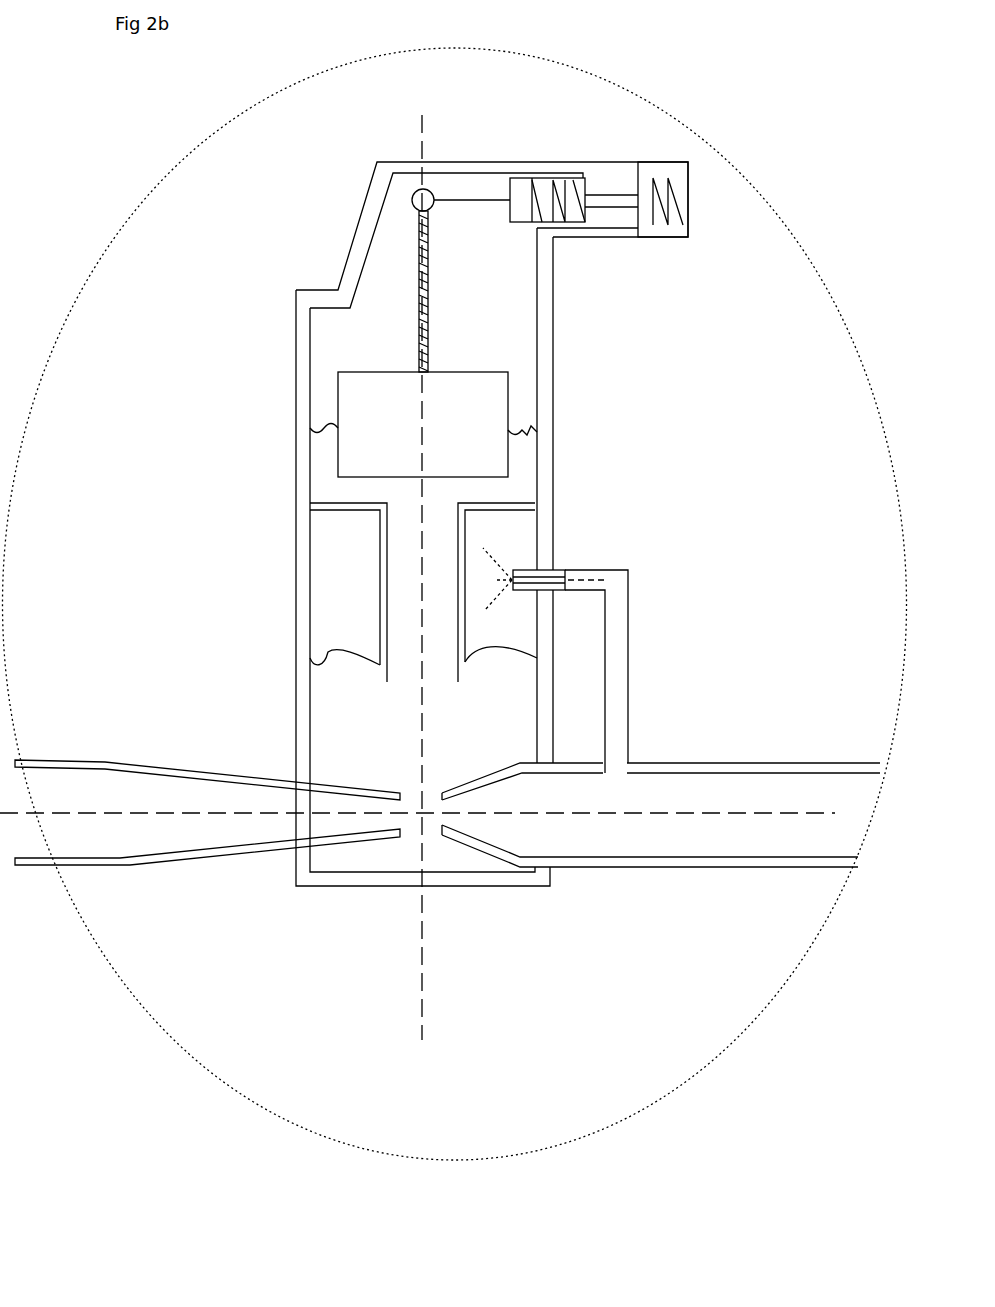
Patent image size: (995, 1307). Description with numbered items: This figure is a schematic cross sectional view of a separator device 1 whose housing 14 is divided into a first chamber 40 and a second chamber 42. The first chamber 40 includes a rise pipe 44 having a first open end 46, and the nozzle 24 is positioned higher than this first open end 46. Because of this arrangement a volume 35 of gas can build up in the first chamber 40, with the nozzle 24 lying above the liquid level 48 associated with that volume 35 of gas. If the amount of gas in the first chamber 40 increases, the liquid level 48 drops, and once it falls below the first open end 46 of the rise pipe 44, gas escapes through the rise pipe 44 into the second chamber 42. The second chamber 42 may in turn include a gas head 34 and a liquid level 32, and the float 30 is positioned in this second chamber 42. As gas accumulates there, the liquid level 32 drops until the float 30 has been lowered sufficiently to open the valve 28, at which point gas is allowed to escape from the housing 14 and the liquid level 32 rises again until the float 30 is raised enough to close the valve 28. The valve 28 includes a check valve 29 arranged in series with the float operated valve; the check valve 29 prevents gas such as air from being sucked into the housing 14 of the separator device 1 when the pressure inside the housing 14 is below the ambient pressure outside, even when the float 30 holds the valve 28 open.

The separator device 1 is at (292, 257).
The housing 14 is at (554, 326).
The nozzle 24 is at (537, 573).
The valve 28 is at (547, 205).
The check valve 29 is at (673, 163).
The float 30 is at (357, 400).
The liquid level 32 is at (537, 432).
The gas head 34 is at (486, 306).
The volume of gas 35 is at (359, 581).
The first chamber 40 is at (330, 622).
The second chamber 42 is at (323, 337).
The rise pipe 44 is at (380, 550).
The first open end 46 is at (403, 683).
The liquid level 48 is at (537, 655).